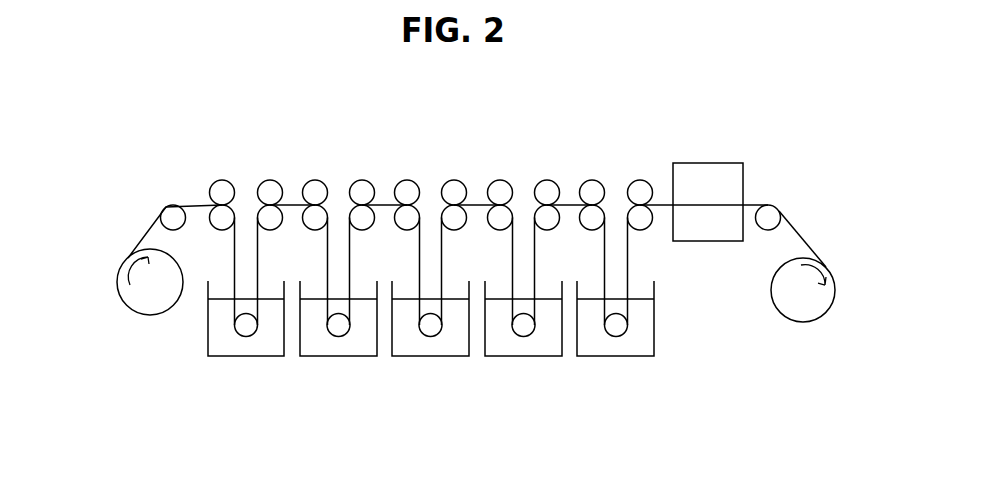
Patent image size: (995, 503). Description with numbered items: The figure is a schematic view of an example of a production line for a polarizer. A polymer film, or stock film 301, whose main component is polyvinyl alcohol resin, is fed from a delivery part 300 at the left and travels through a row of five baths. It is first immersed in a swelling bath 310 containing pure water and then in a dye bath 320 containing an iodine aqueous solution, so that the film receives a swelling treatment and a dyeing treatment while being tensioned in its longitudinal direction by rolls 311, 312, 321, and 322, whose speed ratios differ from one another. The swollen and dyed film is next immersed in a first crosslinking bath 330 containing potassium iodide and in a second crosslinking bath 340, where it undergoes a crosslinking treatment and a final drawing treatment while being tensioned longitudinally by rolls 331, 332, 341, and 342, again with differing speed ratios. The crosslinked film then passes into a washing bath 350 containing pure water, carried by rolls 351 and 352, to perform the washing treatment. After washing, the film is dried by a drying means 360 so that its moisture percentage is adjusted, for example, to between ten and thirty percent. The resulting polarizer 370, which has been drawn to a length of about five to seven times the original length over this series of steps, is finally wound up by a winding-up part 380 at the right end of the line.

The delivery part 300 is at (132, 297).
The polymer film (stock film) 301 is at (148, 230).
The swelling bath 310 is at (246, 346).
The roll 311 is at (223, 190).
The roll 312 is at (271, 190).
The dye bath 320 is at (341, 346).
The roll 321 is at (316, 190).
The roll 322 is at (363, 190).
The first crosslinking bath 330 is at (432, 346).
The roll 331 is at (408, 190).
The roll 332 is at (455, 190).
The second crosslinking bath 340 is at (523, 346).
The roll 341 is at (501, 190).
The roll 342 is at (548, 190).
The washing bath 350 is at (616, 346).
The roll 351 is at (593, 190).
The roll 352 is at (641, 190).
The drying means 360 is at (706, 178).
The polarizer 370 is at (786, 223).
The winding-up part 380 is at (822, 304).